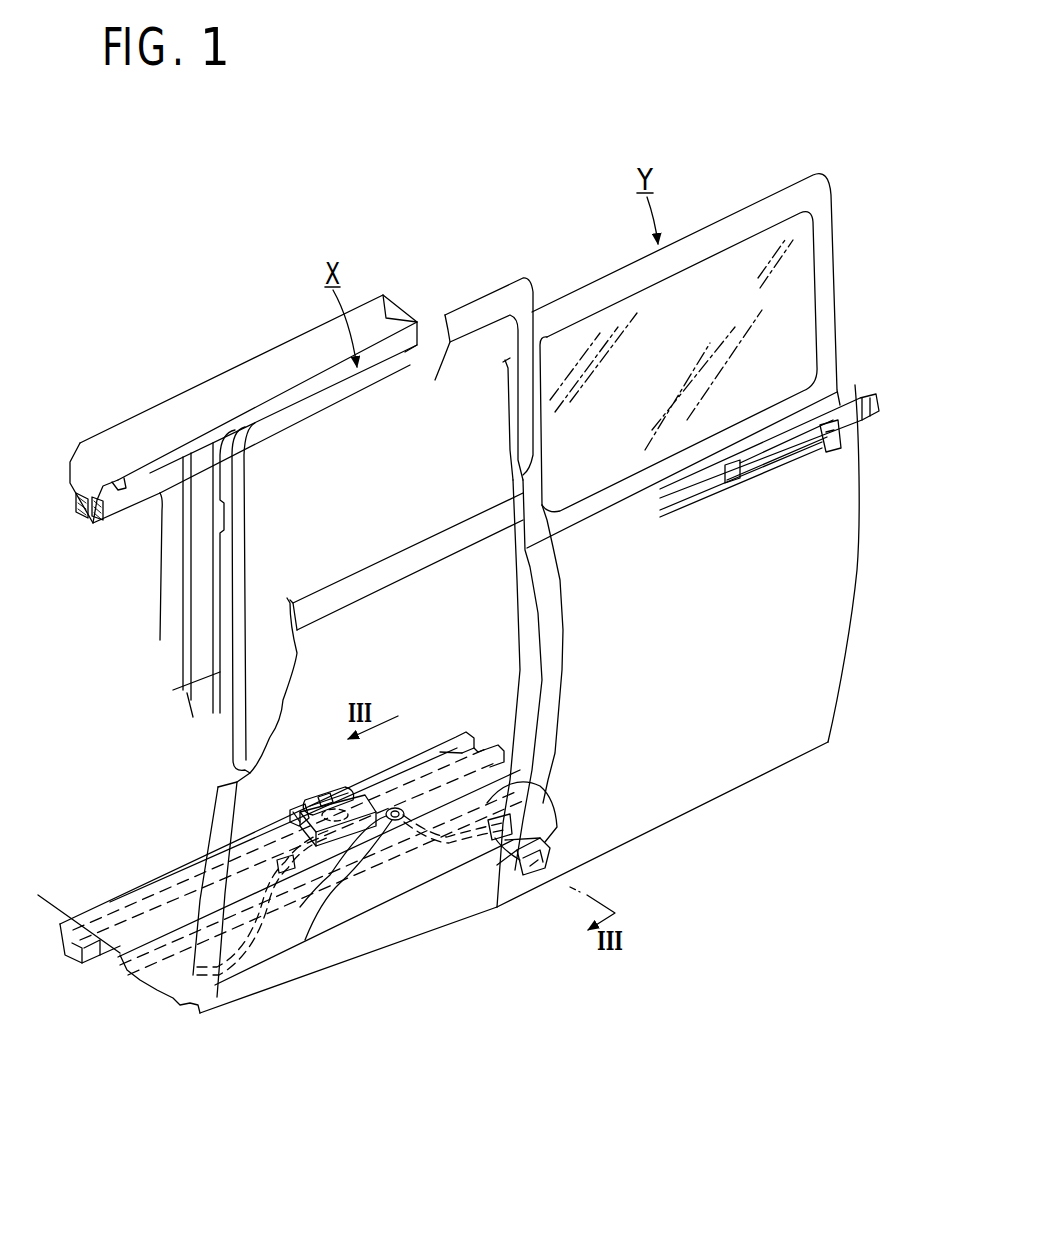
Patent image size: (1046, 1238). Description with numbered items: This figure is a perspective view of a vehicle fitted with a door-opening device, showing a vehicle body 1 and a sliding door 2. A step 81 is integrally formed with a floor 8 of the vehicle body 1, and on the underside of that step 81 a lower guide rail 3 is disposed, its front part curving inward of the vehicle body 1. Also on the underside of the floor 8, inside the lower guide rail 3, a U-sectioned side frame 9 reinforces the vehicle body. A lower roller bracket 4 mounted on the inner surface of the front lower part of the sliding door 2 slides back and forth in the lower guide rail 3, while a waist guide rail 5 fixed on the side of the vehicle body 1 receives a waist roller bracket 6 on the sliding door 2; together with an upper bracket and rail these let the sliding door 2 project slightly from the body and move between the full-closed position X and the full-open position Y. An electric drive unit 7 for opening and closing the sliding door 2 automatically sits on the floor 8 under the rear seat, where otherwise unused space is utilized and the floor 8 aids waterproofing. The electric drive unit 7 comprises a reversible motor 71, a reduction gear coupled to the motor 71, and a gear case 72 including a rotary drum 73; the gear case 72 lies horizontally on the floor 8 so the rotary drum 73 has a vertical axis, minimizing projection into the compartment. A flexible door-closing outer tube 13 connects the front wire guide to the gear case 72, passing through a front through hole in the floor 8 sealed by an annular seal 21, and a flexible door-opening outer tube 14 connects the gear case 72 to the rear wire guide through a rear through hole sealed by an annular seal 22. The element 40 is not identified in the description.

The vehicle body 1 is at (121, 518).
The sliding door 2 is at (497, 283).
The lower guide rail 3 is at (178, 984).
The lower roller bracket 4 is at (528, 870).
The waist guide rail 5 is at (856, 398).
The waist roller bracket 6 is at (830, 452).
The electric drive unit 7 is at (366, 793).
The floor 8 is at (436, 729).
The side frame 9 is at (94, 972).
The door-closing outer tube 13 is at (310, 862).
The door-opening outer tube 14 is at (390, 822).
The annular seal 21 is at (283, 902).
The annular seal 22 is at (404, 822).
The cable guide 40 is at (474, 866).
The reversible motor 71 is at (336, 808).
The gear case 72 is at (303, 807).
The rotary drum 73 is at (327, 800).
The step 81 is at (500, 792).